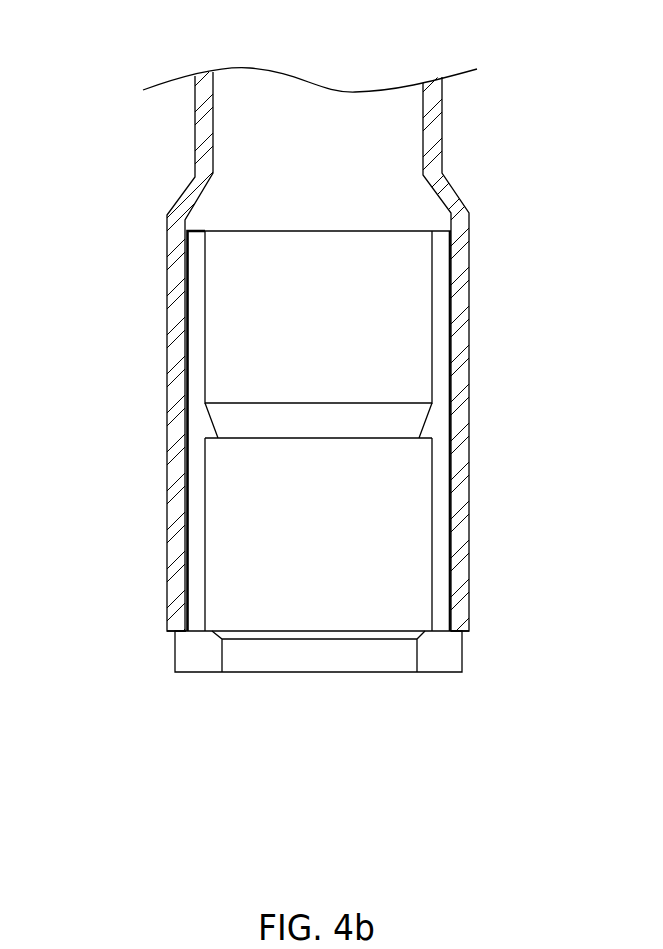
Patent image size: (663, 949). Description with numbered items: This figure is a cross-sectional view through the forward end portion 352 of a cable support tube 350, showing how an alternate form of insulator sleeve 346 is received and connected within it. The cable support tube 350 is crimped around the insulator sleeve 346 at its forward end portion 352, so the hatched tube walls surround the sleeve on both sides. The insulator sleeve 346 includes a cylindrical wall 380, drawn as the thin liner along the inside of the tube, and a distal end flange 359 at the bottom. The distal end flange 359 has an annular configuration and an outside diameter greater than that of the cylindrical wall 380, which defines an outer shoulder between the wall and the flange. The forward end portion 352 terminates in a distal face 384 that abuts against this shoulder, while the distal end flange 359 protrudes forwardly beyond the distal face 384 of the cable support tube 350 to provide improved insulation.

The cable support tube 350 is at (447, 96).
The insulator sleeve 346 is at (183, 413).
The forward end portion 352 is at (467, 411).
The cylindrical wall 380 is at (191, 490).
The distal face 384 is at (173, 627).
The distal end flange 359 is at (437, 668).